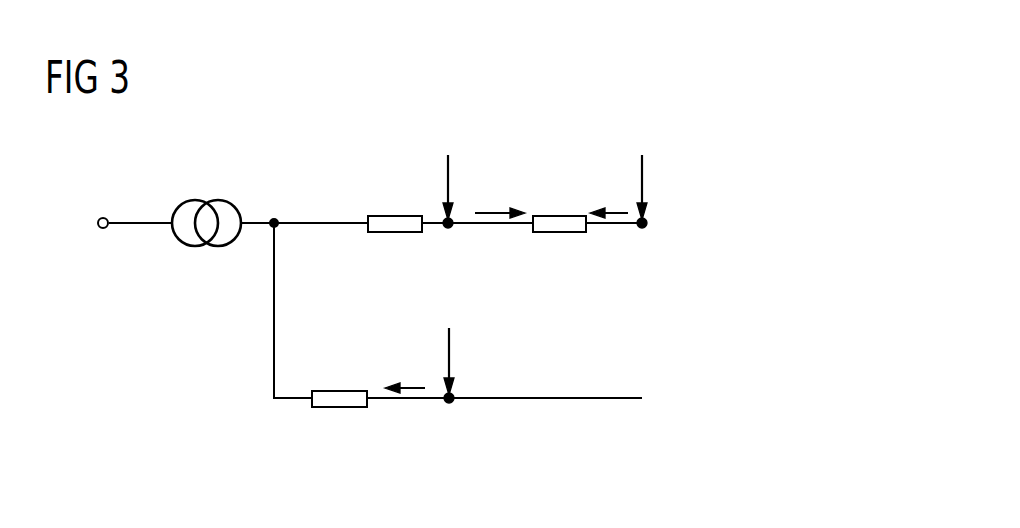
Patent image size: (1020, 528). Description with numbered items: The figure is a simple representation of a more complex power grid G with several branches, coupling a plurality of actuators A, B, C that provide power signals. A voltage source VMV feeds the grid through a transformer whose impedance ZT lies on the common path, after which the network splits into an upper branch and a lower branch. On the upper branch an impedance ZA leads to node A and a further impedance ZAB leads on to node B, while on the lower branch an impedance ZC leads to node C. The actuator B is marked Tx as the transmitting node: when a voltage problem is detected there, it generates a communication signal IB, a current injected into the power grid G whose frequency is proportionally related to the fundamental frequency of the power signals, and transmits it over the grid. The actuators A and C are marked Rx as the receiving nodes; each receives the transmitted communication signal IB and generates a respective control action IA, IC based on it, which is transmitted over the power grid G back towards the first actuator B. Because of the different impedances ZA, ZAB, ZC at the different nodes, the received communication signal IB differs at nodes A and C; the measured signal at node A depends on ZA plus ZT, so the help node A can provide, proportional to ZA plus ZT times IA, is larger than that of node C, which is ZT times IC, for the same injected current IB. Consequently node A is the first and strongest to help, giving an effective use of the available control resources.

The power grid G is at (567, 158).
The medium voltage source VMV is at (102, 202).
The transformer impedance ZT is at (195, 247).
The impedance at node A ZA is at (392, 233).
The impedance between nodes A and B ZAB is at (557, 233).
The impedance at node C ZC is at (343, 408).
The actuator A is at (448, 238).
The actuator B is at (643, 238).
The actuator C is at (451, 415).
The receiving node Rx is at (448, 178).
The transmitting node Tx is at (642, 178).
The control action IA is at (500, 198).
The communication signal IB is at (609, 198).
The control action IC is at (405, 370).